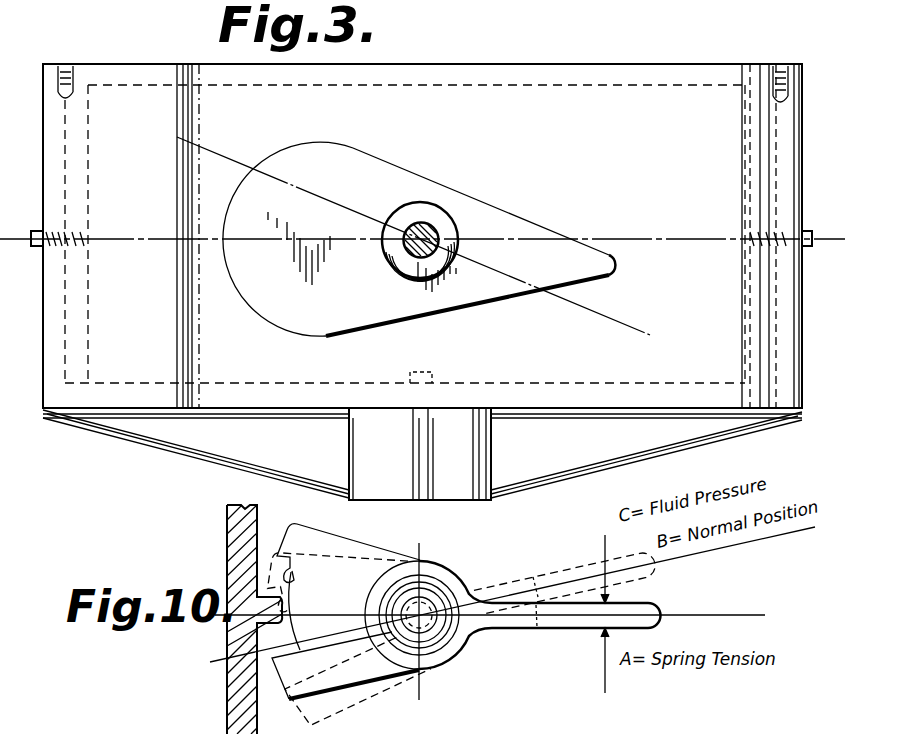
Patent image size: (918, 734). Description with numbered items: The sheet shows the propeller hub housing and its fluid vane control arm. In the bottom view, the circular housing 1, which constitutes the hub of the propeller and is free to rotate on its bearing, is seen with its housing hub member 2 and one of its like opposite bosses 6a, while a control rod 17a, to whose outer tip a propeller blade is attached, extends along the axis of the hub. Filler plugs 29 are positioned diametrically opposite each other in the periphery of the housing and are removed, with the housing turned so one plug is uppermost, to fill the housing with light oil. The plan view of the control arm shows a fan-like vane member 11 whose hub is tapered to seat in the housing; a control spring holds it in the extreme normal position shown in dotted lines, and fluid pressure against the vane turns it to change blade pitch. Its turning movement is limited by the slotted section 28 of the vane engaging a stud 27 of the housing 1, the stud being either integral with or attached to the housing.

In FIG. 3, the housing 1 is at (48, 349).
In FIG. 10, the housing 1 is at (240, 536).
In FIG. 3, the housing hub member 2 is at (322, 342).
In FIG. 3, the boss 6a is at (426, 268).
In FIG. 3, the control rod 17a is at (421, 226).
In FIG. 3, the filler plug 29 is at (30, 231).
In FIG. 10, the vane member 11 is at (442, 586).
In FIG. 10, the stud 27 is at (340, 630).
In FIG. 10, the slotted section 28 is at (295, 580).